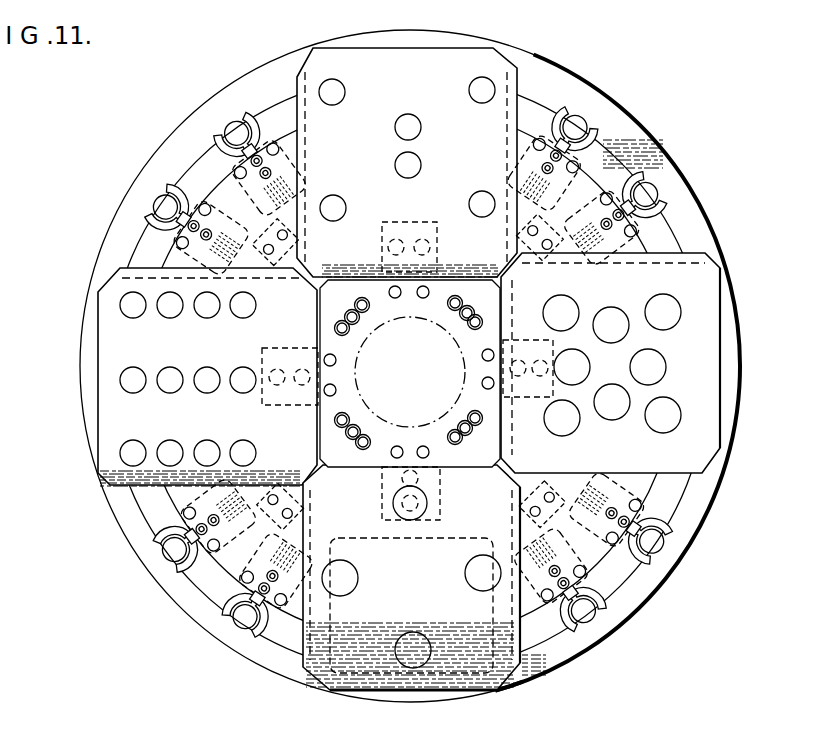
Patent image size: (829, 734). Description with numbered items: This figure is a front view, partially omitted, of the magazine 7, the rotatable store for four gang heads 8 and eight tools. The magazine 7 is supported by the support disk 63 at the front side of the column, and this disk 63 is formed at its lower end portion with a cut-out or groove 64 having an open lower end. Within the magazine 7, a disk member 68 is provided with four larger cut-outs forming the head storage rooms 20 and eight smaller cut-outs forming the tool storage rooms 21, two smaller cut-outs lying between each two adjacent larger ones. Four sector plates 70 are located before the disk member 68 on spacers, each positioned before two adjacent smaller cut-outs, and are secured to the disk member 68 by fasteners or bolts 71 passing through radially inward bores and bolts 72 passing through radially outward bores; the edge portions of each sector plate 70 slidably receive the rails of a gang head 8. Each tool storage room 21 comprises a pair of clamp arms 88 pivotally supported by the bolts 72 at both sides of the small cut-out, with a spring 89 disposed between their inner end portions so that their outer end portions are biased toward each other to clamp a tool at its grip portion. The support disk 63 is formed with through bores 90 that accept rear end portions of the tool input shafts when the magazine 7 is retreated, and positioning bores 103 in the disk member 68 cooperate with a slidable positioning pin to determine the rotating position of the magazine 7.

The magazine 7 is at (675, 227).
The gang head 8 is at (433, 78).
The head storage room 20 is at (522, 83).
The tool storage room 21 is at (595, 153).
The support disk 63 is at (673, 545).
The cut-out or groove 64 is at (495, 694).
The disk member 68 is at (537, 630).
The sector plate 70 is at (283, 215).
The fastener or bolt 71 is at (272, 250).
The fastener or bolt 72 is at (285, 147).
The clamp arm 88 is at (255, 112).
The spring 89 is at (292, 190).
The through bore 90 is at (238, 120).
The positioning bore 103 is at (455, 315).